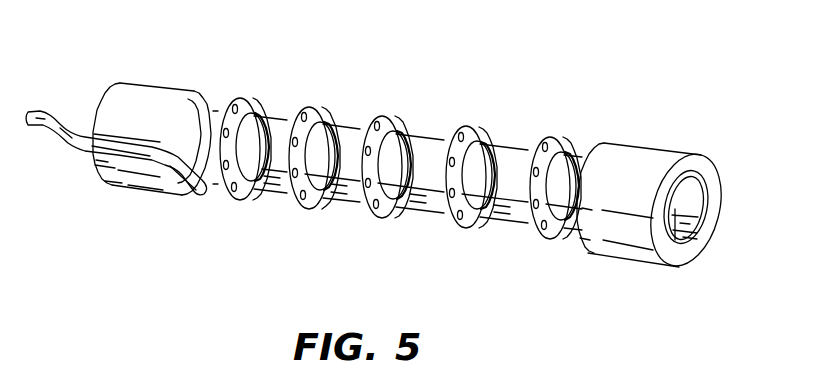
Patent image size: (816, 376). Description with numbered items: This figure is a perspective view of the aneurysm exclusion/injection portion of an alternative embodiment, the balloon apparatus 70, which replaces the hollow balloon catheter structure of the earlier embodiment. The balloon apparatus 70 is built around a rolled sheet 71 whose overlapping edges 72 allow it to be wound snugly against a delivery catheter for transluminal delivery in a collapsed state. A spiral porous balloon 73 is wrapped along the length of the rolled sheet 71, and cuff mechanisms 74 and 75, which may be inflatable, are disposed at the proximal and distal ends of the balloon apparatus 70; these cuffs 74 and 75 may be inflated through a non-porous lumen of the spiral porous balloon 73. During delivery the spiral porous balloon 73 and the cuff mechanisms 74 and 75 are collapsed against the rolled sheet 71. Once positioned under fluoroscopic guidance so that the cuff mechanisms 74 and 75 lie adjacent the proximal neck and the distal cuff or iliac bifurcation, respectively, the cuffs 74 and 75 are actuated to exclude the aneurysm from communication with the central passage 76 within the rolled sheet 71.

The balloon apparatus 70 is at (403, 152).
The rolled sheet 71 is at (351, 127).
The overlapping edges 72 is at (357, 198).
The spiral porous balloon 73 is at (248, 203).
The cuff mechanism 74 is at (660, 143).
The cuff mechanism 75 is at (161, 89).
The central passage 76 is at (688, 193).